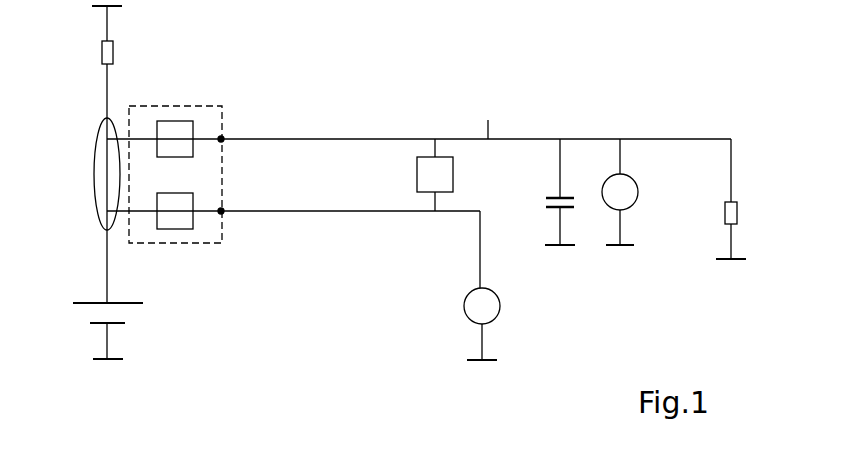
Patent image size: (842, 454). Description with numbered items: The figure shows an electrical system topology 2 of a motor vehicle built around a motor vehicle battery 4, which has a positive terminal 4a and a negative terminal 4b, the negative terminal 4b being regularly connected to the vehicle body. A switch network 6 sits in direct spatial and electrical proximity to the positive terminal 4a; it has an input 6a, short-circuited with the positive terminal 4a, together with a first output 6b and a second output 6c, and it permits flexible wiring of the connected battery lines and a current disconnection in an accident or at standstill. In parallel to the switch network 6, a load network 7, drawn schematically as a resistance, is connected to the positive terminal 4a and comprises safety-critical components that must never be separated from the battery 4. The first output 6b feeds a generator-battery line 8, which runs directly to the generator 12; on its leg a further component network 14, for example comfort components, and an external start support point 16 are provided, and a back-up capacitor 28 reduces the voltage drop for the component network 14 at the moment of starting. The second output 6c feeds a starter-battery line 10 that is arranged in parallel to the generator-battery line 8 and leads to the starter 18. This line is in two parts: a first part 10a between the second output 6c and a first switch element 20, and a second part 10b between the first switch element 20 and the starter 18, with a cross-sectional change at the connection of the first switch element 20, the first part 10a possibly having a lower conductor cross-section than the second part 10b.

The electrical system topology 2 is at (619, 98).
The motor vehicle battery 4 is at (85, 314).
The positive terminal 4a is at (80, 303).
The negative terminal 4b is at (98, 323).
The switch network 6 is at (157, 106).
The input 6a is at (96, 183).
The first output 6b is at (222, 138).
The second output 6c is at (222, 212).
The load network 7 is at (101, 50).
The generator-battery line 8 is at (337, 139).
The starter-battery line 10 is at (396, 240).
The first part 10a is at (328, 211).
The second part 10b is at (481, 260).
The generator 12 is at (637, 197).
The component network 14 is at (739, 210).
The external start support point 16 is at (492, 129).
The starter 18 is at (500, 312).
The first switch element 20 is at (416, 175).
The back-up capacitor 28 is at (546, 197).